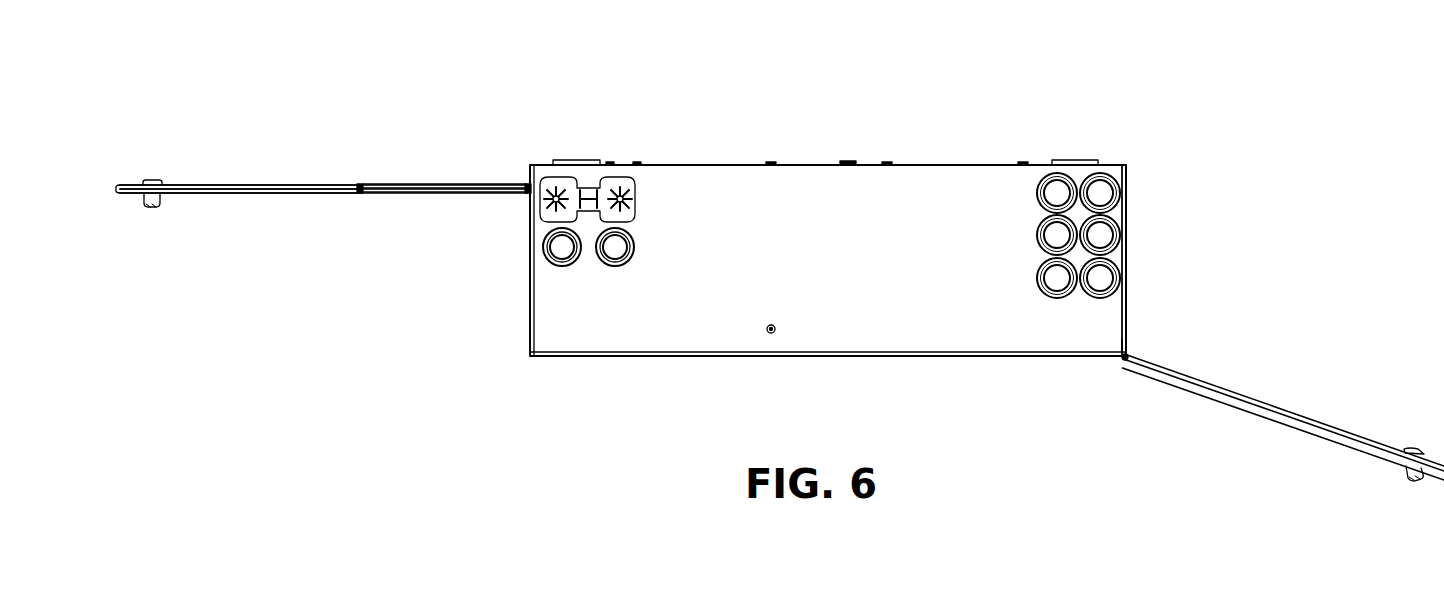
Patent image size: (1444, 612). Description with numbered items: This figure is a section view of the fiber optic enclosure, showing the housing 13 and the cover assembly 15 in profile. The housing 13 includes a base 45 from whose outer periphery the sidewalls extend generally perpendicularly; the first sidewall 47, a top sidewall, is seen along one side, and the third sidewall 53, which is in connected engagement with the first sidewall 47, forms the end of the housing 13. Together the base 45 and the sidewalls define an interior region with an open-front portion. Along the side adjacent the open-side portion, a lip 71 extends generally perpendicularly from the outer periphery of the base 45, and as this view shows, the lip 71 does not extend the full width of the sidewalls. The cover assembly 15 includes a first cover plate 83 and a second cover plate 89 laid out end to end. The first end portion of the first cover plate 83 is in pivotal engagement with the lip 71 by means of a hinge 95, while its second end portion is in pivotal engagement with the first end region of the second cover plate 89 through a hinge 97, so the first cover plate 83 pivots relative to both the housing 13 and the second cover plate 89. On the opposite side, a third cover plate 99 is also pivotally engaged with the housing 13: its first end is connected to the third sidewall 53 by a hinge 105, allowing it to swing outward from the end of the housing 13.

The housing 13 is at (923, 130).
The cover assembly 15 is at (302, 130).
The base 45 is at (750, 165).
The first sidewall 47 is at (843, 266).
The third sidewall 53 is at (1127, 272).
The lip 71 is at (530, 186).
The first cover plate 83 is at (414, 181).
The second cover plate 89 is at (241, 181).
The hinge 95 is at (528, 193).
The hinge 97 is at (360, 193).
The third cover plate 99 is at (1254, 393).
The hinge 105 is at (1127, 356).